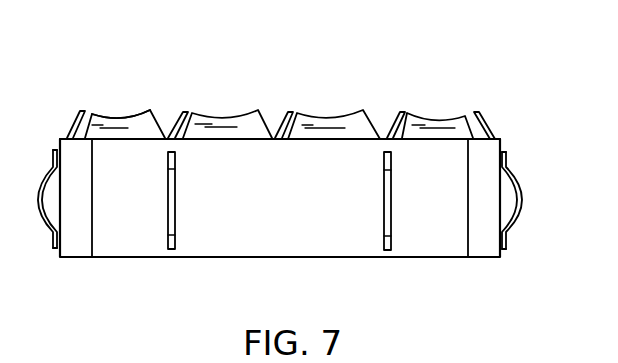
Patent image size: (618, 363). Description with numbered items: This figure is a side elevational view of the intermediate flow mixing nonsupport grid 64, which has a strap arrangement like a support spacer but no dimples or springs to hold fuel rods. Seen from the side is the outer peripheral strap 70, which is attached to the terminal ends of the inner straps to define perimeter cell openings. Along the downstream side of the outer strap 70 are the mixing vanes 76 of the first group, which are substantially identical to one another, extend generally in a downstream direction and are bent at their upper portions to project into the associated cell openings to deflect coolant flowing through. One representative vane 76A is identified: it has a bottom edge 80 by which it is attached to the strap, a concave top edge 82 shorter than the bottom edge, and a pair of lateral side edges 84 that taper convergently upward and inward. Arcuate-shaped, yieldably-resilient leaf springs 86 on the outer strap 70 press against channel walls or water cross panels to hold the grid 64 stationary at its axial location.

The intermediate flow mixing nonsupport grid 64 is at (512, 121).
The outer peripheral strap 70 is at (303, 262).
The mixing vanes of the first group 76 is at (240, 110).
The vane 76A is at (122, 108).
The bottom edge 80 is at (127, 139).
The top edge 82 is at (146, 112).
The lateral side edges 84 is at (79, 113).
The leaf springs 86 is at (43, 215).